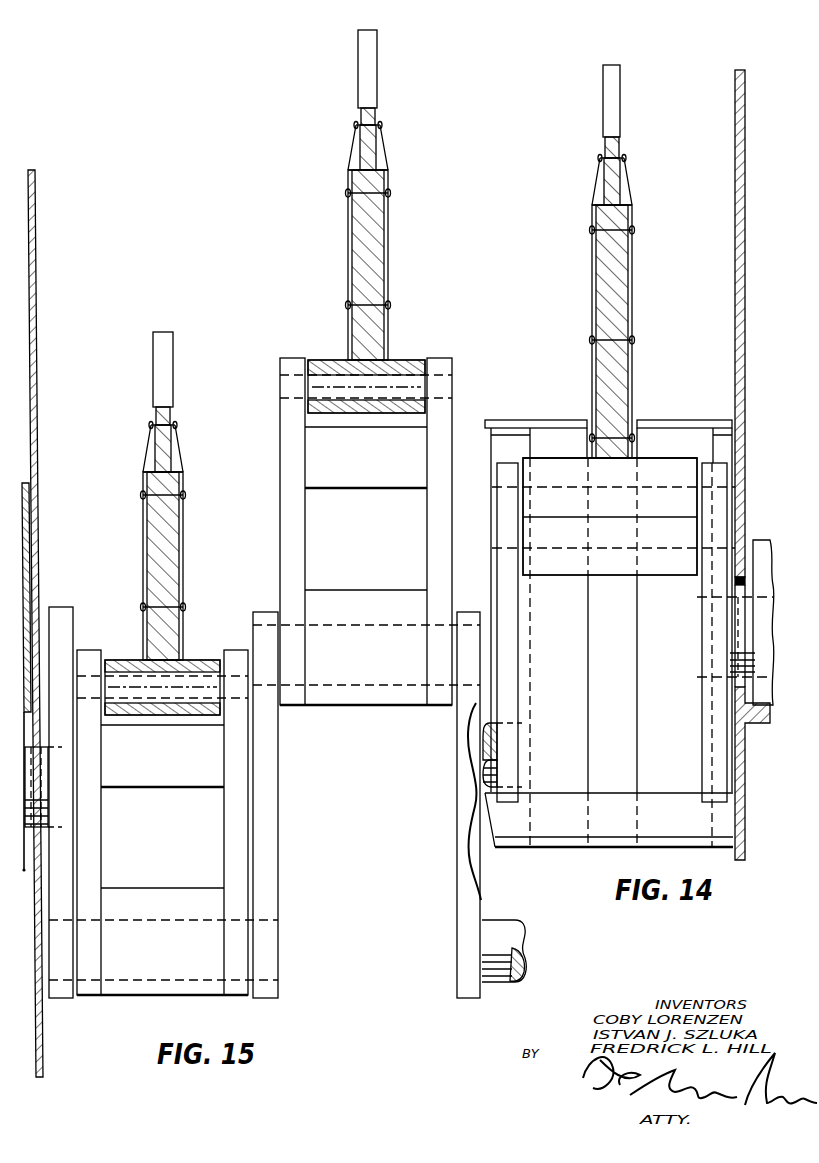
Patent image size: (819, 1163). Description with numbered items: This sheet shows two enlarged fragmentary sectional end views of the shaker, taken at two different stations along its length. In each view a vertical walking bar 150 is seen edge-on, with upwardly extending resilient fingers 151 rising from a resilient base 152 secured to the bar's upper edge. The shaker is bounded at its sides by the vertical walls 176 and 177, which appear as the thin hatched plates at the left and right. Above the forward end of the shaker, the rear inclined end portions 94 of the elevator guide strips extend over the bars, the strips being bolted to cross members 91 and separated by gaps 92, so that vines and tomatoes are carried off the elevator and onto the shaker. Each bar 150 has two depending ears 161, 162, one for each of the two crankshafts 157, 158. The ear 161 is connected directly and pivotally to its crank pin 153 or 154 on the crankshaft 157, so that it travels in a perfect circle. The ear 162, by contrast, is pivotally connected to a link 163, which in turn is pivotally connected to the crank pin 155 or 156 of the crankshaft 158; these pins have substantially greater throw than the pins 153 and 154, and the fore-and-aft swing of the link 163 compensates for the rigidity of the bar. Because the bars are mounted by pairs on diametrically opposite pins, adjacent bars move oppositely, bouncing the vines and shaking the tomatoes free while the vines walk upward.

In FIG. 14, the cross members 91 is at (568, 822).
In FIG. 14, the gaps 92 is at (628, 602).
In FIG. 14, the rear inclined end portion 94 is at (555, 419).
In FIG. 15, the walking bars 150 is at (177, 565).
In FIG. 14, the walking bars 150 is at (620, 302).
In FIG. 15, the resilient fingers 151 is at (167, 342).
In FIG. 14, the resilient fingers 151 is at (615, 95).
In FIG. 15, the resilient base 152 is at (167, 462).
In FIG. 14, the resilient base 152 is at (620, 197).
In FIG. 14, the crank pin 153 is at (682, 489).
In FIG. 14, the crank pin 154 is at (522, 756).
In FIG. 15, the crank pin 155 is at (144, 969).
In FIG. 14, the crank pin 155 is at (516, 943).
In FIG. 15, the crank pin 156 is at (387, 680).
In FIG. 14, the crankshaft 157 is at (733, 640).
In FIG. 15, the crankshaft 158 is at (44, 787).
In FIG. 14, the ear 161 is at (572, 515).
In FIG. 15, the ear 162 is at (200, 668).
In FIG. 15, the link 163 is at (97, 874).
In FIG. 15, the vertical wall 176 is at (35, 305).
In FIG. 14, the vertical wall 177 is at (735, 273).